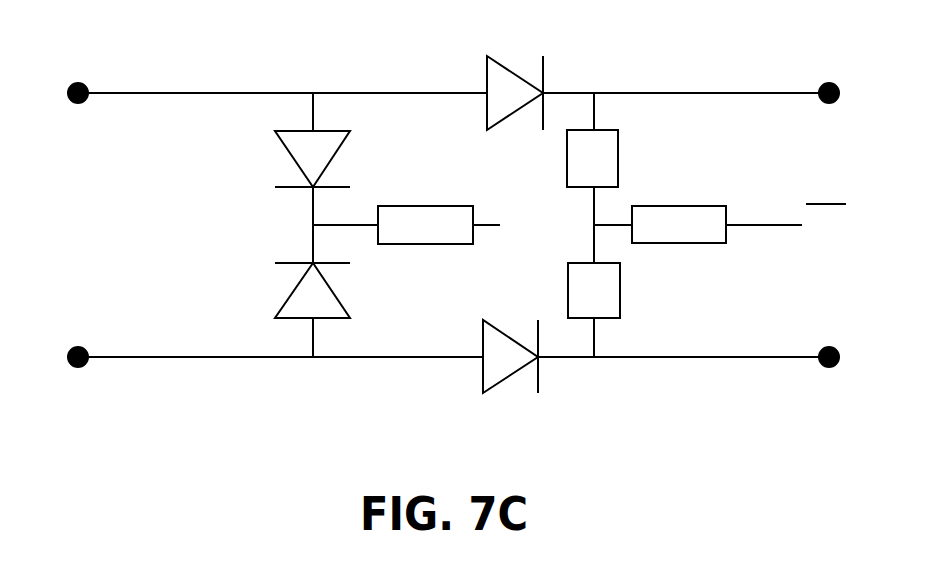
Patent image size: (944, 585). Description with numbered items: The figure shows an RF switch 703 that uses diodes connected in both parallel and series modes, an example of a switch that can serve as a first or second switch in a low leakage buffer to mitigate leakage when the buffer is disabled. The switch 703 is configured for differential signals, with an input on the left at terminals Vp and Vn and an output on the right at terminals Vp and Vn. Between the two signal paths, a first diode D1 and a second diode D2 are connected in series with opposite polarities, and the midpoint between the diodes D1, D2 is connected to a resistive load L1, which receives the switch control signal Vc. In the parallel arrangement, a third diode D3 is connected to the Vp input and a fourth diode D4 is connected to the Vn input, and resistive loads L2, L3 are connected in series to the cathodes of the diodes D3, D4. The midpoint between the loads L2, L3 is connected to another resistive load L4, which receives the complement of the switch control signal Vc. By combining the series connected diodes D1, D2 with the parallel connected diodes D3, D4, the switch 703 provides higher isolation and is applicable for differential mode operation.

The RF switch 703 is at (476, 238).
The first diode D1 is at (342, 159).
The second diode D2 is at (342, 290).
The third diode D3 is at (515, 109).
The fourth diode D4 is at (510, 340).
The resistive load L1 is at (425, 225).
The resistive load L2 is at (592, 158).
The resistive load L3 is at (594, 290).
The resistive load L4 is at (679, 224).